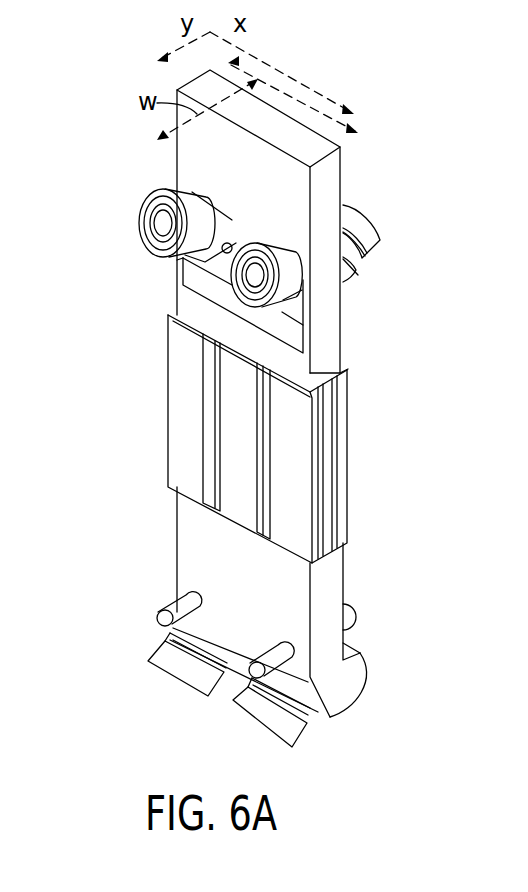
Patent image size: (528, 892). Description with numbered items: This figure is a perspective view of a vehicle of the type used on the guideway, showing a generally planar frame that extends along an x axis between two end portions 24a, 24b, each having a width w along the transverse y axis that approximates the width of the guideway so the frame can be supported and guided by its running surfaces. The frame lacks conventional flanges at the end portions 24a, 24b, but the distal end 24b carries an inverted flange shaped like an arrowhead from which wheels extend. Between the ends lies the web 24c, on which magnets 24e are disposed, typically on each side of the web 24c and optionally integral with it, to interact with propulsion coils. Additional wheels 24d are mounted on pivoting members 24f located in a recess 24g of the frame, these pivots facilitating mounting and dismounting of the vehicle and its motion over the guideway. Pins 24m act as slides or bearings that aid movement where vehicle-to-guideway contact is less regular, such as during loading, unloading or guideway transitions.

The end portion 24a is at (334, 153).
The distal end 24b is at (330, 690).
The web 24c is at (333, 306).
The rollers 24d is at (378, 221).
The magnets 24e is at (234, 441).
The pivoting members 24f is at (230, 221).
The recess 24g is at (290, 333).
The pins 24m is at (277, 653).